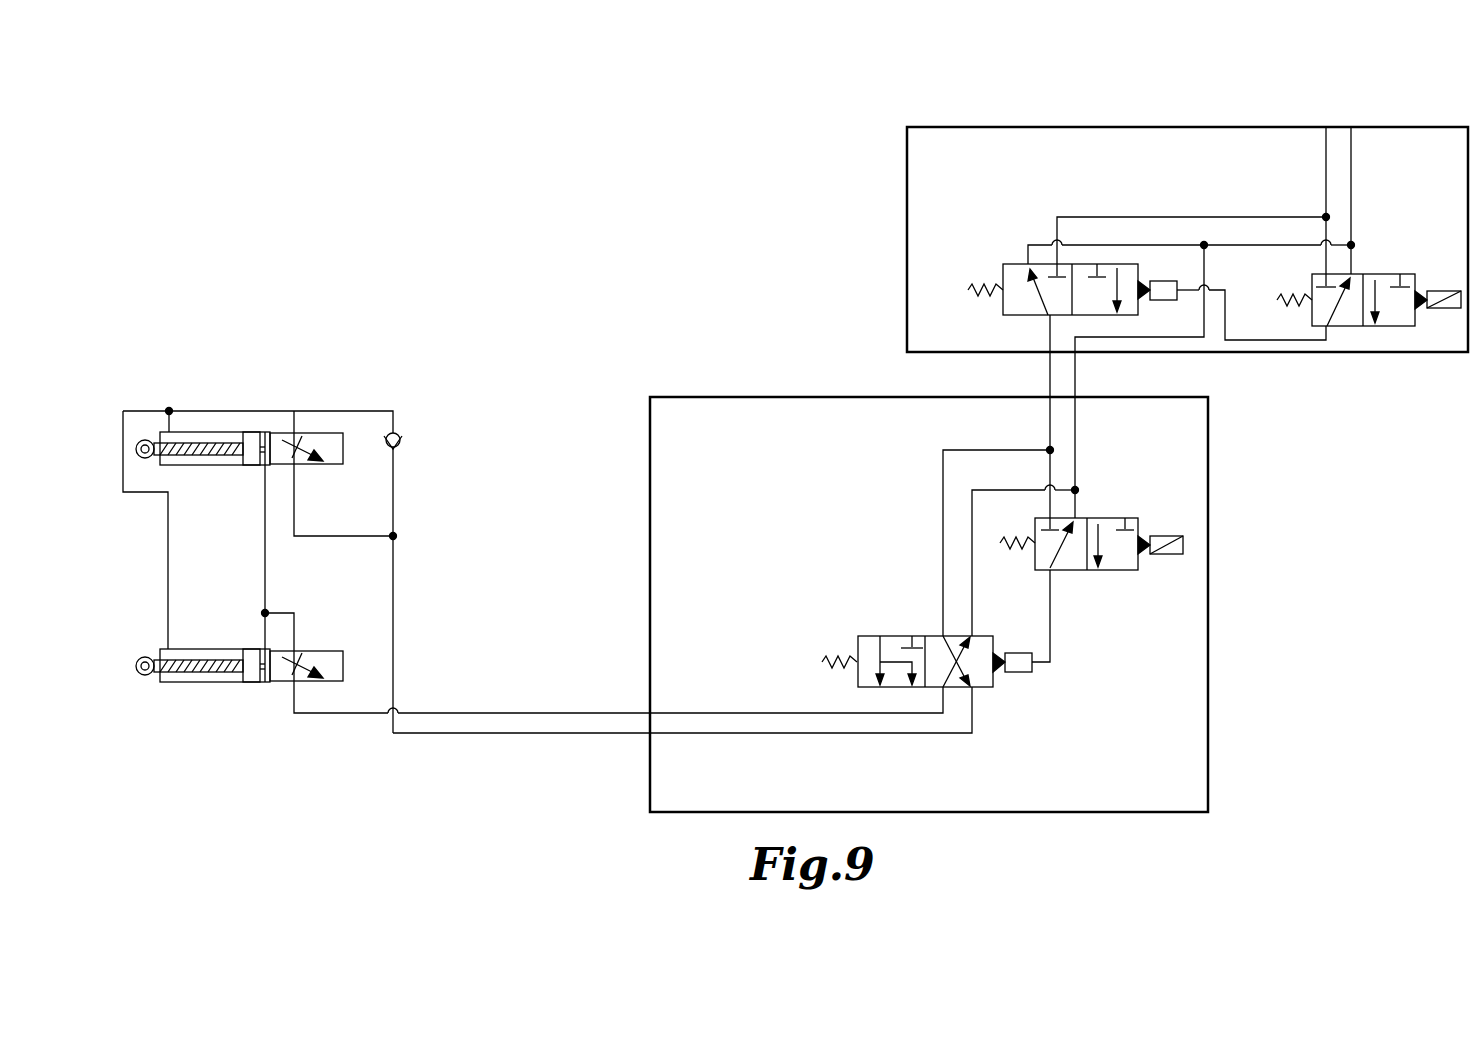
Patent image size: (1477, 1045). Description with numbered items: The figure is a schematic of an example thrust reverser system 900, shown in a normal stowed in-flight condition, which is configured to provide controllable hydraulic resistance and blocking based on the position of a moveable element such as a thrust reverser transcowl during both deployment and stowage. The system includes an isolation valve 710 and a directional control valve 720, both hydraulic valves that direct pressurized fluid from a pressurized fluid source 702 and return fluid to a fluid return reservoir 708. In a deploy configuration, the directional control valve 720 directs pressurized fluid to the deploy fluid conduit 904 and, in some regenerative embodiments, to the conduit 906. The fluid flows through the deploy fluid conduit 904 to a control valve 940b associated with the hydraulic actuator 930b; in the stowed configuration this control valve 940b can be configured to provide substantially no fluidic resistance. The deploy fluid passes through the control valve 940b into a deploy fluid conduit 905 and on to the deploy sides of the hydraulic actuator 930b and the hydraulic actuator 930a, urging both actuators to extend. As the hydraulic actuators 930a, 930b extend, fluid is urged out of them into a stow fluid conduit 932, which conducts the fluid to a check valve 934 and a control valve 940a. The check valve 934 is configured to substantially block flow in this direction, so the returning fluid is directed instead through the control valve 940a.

The thrust reverser system 900 is at (273, 322).
The stow fluid conduit 932 is at (212, 411).
The hydraulic actuator 930a is at (215, 466).
The hydraulic actuator 930b is at (210, 683).
The control valve 940a is at (318, 432).
The control valve 940b is at (318, 651).
The check valve 934 is at (399, 434).
The deploy fluid conduit 905 is at (265, 568).
The deploy fluid conduit 904 is at (490, 712).
The conduit 906 is at (500, 735).
The directional control valve 720 is at (929, 604).
The isolation valve 710 is at (1187, 322).
The pressurized fluid source 702 is at (1326, 127).
The fluid return reservoir 708 is at (1351, 127).